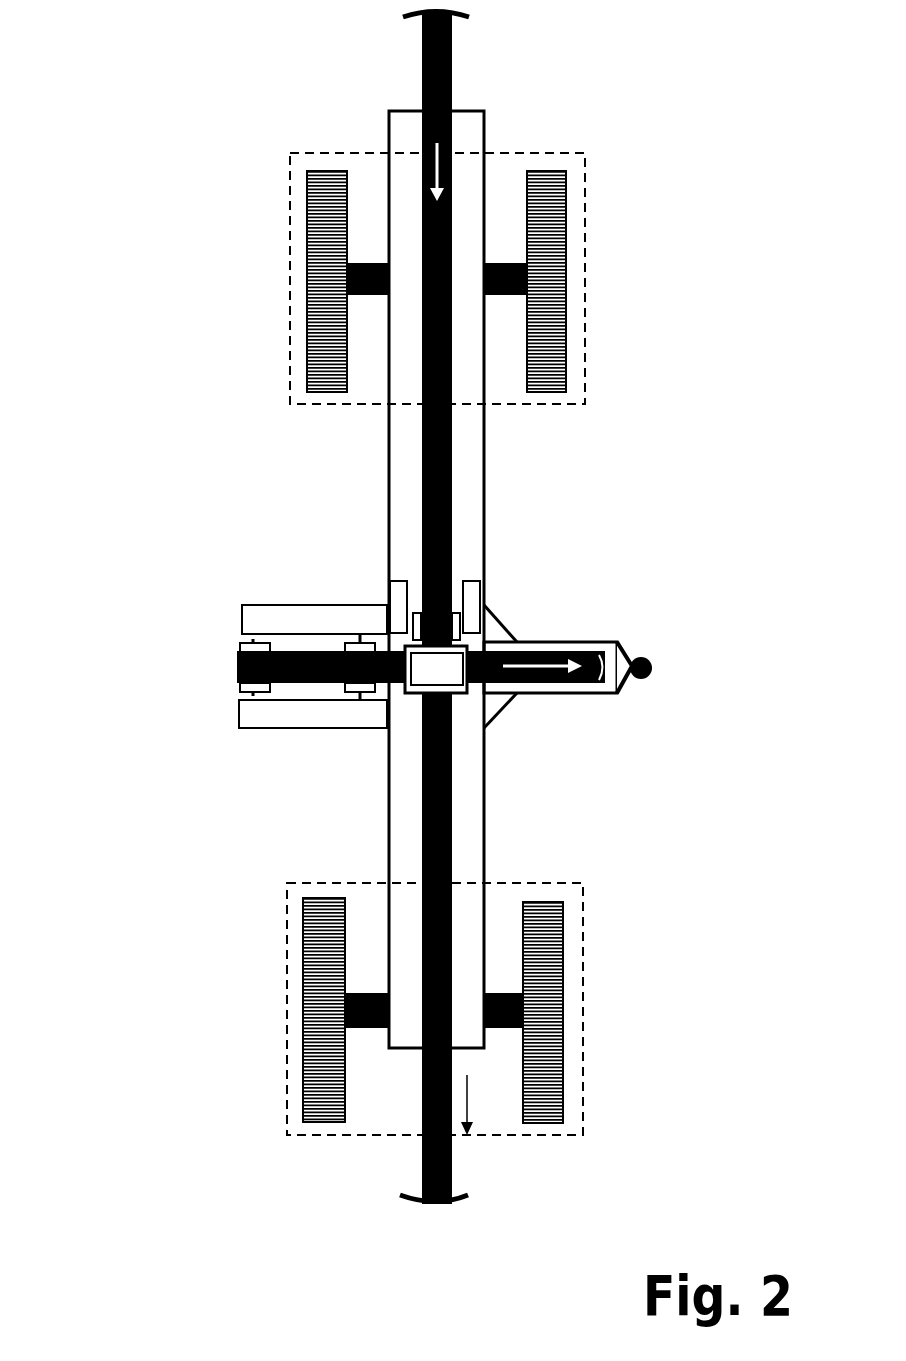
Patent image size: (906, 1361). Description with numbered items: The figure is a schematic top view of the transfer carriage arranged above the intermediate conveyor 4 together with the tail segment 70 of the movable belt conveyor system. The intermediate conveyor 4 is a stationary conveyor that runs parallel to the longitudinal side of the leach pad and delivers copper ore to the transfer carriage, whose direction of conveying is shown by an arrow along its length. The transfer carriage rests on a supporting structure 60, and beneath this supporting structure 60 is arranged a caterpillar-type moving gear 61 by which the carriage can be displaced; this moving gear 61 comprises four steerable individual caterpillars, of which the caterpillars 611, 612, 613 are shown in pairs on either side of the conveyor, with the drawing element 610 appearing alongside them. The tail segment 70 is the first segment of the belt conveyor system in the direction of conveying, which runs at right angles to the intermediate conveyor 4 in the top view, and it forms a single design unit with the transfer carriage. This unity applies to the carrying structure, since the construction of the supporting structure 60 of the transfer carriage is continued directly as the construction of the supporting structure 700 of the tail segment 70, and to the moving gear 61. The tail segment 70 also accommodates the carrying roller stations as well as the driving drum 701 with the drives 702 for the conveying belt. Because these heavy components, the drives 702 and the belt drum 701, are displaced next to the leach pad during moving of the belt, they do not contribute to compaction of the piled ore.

The second intermediate conveyor 4 is at (452, 43).
The supporting structure 60 is at (484, 472).
The caterpillar-type moving gear 61 is at (585, 335).
The coil 610 is at (307, 226).
The steerable individual caterpillar 611 is at (553, 224).
The steerable individual caterpillar 612 is at (305, 975).
The steerable individual caterpillar 613 is at (550, 982).
The tail segment 70 is at (547, 634).
The supporting structure 700 is at (583, 695).
The driving drum 701 is at (360, 643).
The drives 702 is at (305, 627).